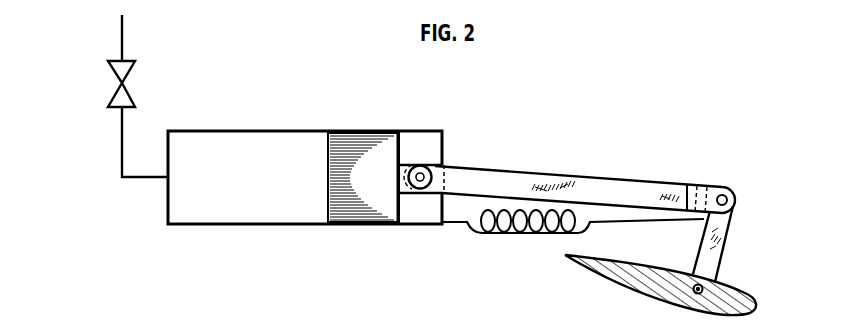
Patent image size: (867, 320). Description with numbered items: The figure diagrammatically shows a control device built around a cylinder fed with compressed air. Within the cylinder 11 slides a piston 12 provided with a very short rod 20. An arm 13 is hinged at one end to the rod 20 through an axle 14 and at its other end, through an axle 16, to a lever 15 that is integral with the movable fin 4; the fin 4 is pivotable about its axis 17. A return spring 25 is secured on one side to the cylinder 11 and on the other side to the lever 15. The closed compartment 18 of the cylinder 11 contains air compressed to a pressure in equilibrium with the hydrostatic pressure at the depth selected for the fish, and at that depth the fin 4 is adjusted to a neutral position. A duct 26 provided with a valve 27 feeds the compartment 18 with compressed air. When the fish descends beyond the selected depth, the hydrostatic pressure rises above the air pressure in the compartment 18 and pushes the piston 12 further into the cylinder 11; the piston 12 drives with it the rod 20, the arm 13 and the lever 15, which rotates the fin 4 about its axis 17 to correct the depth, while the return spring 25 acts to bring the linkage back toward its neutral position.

The movable fin 4 is at (756, 303).
The cylinder 11 is at (214, 130).
The piston 12 is at (367, 176).
The arm 13 is at (507, 185).
The axle 14 is at (434, 173).
The lever 15 is at (717, 240).
The axle 16 is at (727, 196).
The axis 17 is at (703, 289).
The closed compartment 18 is at (236, 176).
The rod 20 is at (407, 164).
The return spring 25 is at (527, 234).
The duct 26 is at (118, 151).
The valve 27 is at (113, 76).